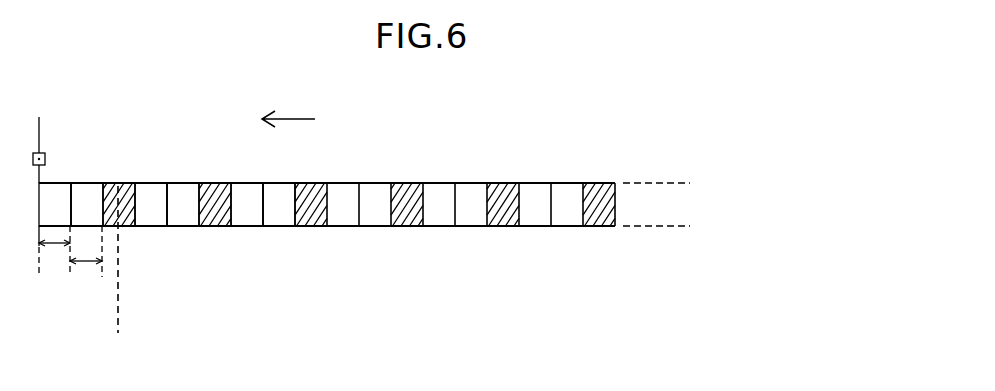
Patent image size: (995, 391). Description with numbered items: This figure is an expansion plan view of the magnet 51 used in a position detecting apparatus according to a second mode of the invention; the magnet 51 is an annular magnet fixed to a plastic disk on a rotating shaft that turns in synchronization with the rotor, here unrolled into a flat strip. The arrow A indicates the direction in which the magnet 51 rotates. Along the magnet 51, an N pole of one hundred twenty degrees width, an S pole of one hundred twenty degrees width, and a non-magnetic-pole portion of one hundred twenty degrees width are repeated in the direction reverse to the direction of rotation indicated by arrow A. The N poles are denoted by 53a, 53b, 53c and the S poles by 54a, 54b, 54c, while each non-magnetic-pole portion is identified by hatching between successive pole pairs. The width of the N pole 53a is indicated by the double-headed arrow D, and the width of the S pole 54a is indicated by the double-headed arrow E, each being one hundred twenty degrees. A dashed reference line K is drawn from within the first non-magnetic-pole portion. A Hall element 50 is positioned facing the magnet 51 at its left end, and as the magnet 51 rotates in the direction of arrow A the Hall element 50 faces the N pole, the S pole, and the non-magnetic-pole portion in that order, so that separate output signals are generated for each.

The Hall element 50 is at (46, 155).
The magnet 51 is at (378, 182).
The N pole 53a is at (58, 190).
The S pole 54a is at (88, 190).
The N pole 53b is at (153, 226).
The S pole 54b is at (185, 226).
The N pole 53c is at (247, 214).
The S pole 54c is at (278, 214).
The arrow A is at (287, 119).
The double-headed arrow D is at (53, 247).
The double-headed arrow E is at (79, 265).
The reference line K is at (119, 306).